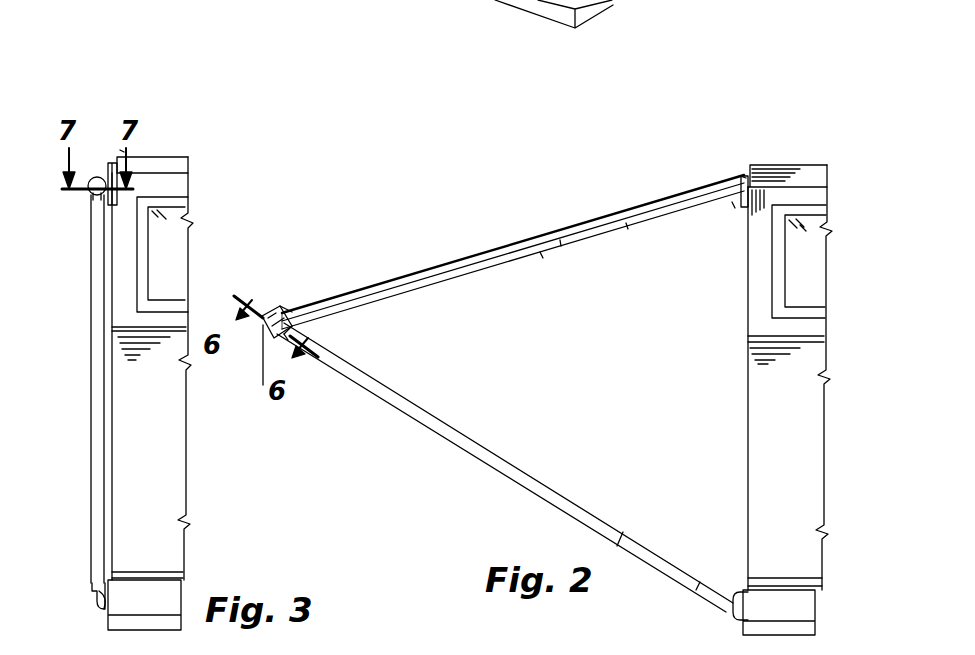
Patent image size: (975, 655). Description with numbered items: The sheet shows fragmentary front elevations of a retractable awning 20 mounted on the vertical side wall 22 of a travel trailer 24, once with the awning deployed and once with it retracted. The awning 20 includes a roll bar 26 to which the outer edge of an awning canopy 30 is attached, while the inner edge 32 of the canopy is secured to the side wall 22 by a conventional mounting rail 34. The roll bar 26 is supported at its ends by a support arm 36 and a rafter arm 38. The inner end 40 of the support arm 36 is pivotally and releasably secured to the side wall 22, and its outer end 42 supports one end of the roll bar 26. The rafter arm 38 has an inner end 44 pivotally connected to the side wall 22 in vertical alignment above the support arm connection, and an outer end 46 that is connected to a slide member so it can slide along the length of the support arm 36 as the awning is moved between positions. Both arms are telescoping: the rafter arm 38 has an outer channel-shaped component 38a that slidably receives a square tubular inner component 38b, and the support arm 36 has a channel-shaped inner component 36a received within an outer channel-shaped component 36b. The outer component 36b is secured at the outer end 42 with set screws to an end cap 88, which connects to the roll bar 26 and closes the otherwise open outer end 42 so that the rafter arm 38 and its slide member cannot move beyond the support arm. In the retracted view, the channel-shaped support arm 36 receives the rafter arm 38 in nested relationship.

In FIG. 3, the retractable awning 20 is at (76, 315).
In FIG. 2, the retractable awning 20 is at (419, 237).
In FIG. 3, the side wall 22 is at (112, 262).
In FIG. 2, the side wall 22 is at (750, 294).
In FIG. 3, the travel trailer 24 is at (188, 157).
In FIG. 2, the travel trailer 24 is at (769, 166).
In FIG. 3, the roll bar 26 is at (90, 196).
In FIG. 2, the roll bar 26 is at (272, 310).
In FIG. 2, the awning canopy 30 is at (498, 252).
In FIG. 2, the inner edge 32 is at (745, 180).
In FIG. 2, the mounting rail 34 is at (745, 178).
In FIG. 3, the support arm 36 is at (92, 380).
In FIG. 2, the support arm 36 is at (440, 428).
In FIG. 2, the inner telescoping component of the support arm 36a is at (635, 543).
In FIG. 2, the outer telescoping component of the support arm 36b is at (520, 474).
In FIG. 2, the rafter arm 38 is at (530, 264).
In FIG. 2, the outer telescoping rafter arm component 38a is at (570, 245).
In FIG. 2, the inner telescoping rafter arm component 38b is at (628, 228).
In FIG. 2, the inner end of support arm 40 is at (730, 603).
In FIG. 2, the outer end of support arm 42 is at (291, 310).
In FIG. 2, the inner end of rafter arm 44 is at (733, 206).
In FIG. 2, the outer end of rafter arm 46 is at (288, 333).
In FIG. 2, the end cap 88 is at (265, 332).